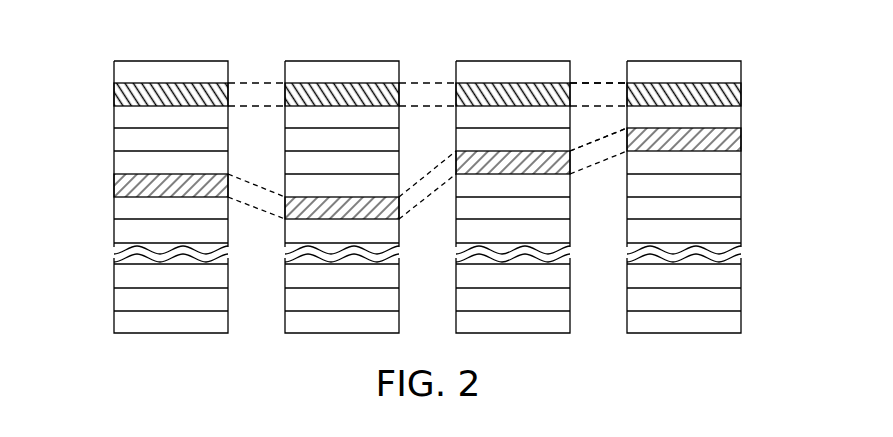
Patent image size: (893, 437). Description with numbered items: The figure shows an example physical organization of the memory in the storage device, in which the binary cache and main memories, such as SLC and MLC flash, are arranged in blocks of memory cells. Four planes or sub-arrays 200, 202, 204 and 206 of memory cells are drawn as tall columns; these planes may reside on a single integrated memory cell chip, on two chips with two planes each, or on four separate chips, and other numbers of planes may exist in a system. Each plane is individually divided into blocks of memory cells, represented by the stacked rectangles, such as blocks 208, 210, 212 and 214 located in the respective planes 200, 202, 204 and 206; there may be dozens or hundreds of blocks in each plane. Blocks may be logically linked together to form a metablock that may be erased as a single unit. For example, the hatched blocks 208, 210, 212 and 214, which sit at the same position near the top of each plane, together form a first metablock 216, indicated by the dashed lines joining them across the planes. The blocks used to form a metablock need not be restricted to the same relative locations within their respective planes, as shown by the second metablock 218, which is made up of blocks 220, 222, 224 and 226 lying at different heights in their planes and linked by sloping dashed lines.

The plane 200 is at (142, 169).
The plane 202 is at (331, 169).
The plane 204 is at (485, 169).
The plane 206 is at (715, 174).
The block 208 is at (153, 95).
The block 210 is at (325, 93).
The block 212 is at (497, 92).
The block 214 is at (705, 95).
The first metablock 216 is at (596, 76).
The second metablock 218 is at (603, 127).
The block 220 is at (148, 183).
The block 222 is at (328, 208).
The block 224 is at (500, 160).
The block 226 is at (707, 137).